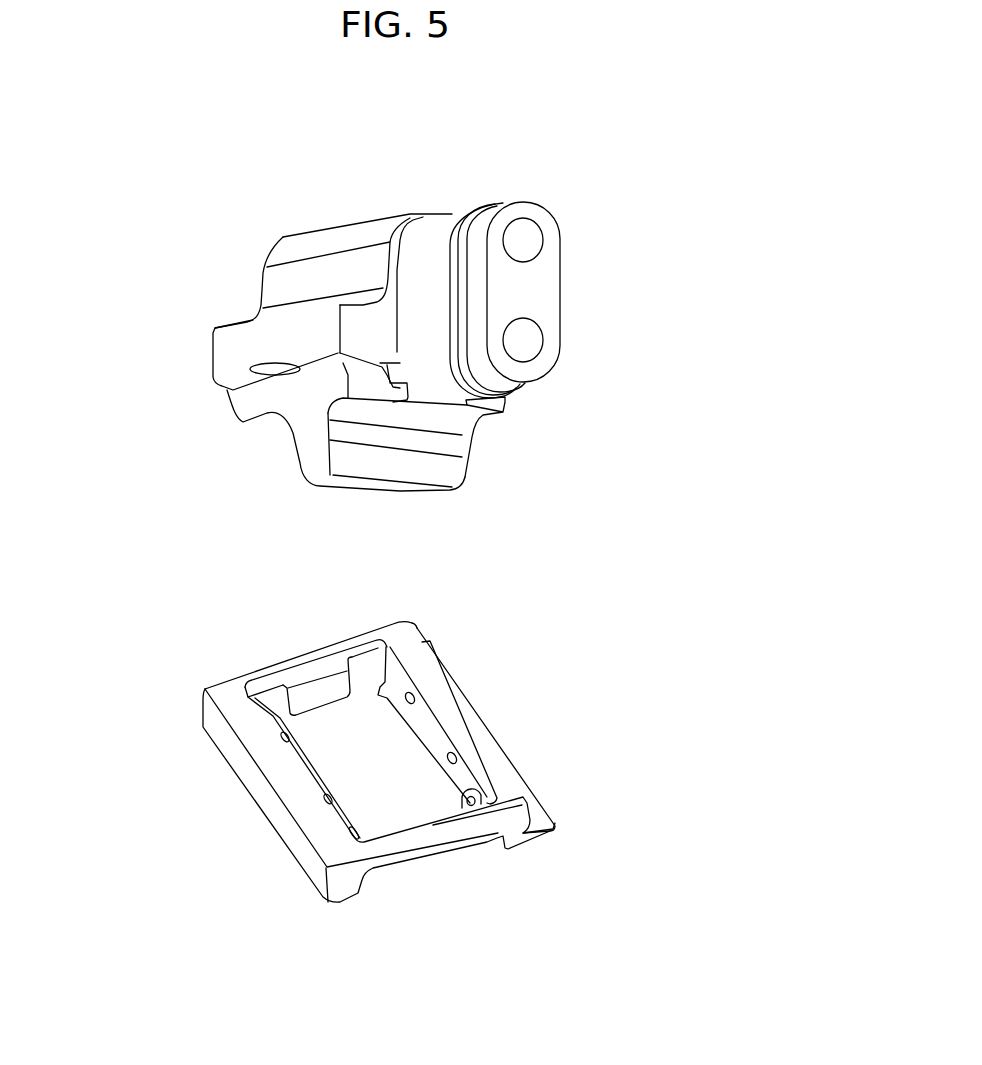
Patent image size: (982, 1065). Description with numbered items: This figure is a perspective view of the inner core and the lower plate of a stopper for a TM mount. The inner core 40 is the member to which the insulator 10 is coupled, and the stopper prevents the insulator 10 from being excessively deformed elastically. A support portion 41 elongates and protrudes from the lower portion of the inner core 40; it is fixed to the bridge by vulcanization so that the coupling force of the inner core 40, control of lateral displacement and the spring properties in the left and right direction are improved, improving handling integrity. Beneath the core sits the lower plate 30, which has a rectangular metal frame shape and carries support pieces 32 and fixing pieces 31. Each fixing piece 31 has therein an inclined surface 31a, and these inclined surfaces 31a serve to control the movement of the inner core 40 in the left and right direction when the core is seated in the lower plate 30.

The insulator 10 is at (336, 252).
The inner core 40 is at (530, 287).
The support portion 41 is at (433, 470).
The lower plate 30 is at (493, 757).
The fixing piece 31 is at (423, 747).
The inclined surface 31a is at (462, 780).
The support piece 32 is at (305, 688).